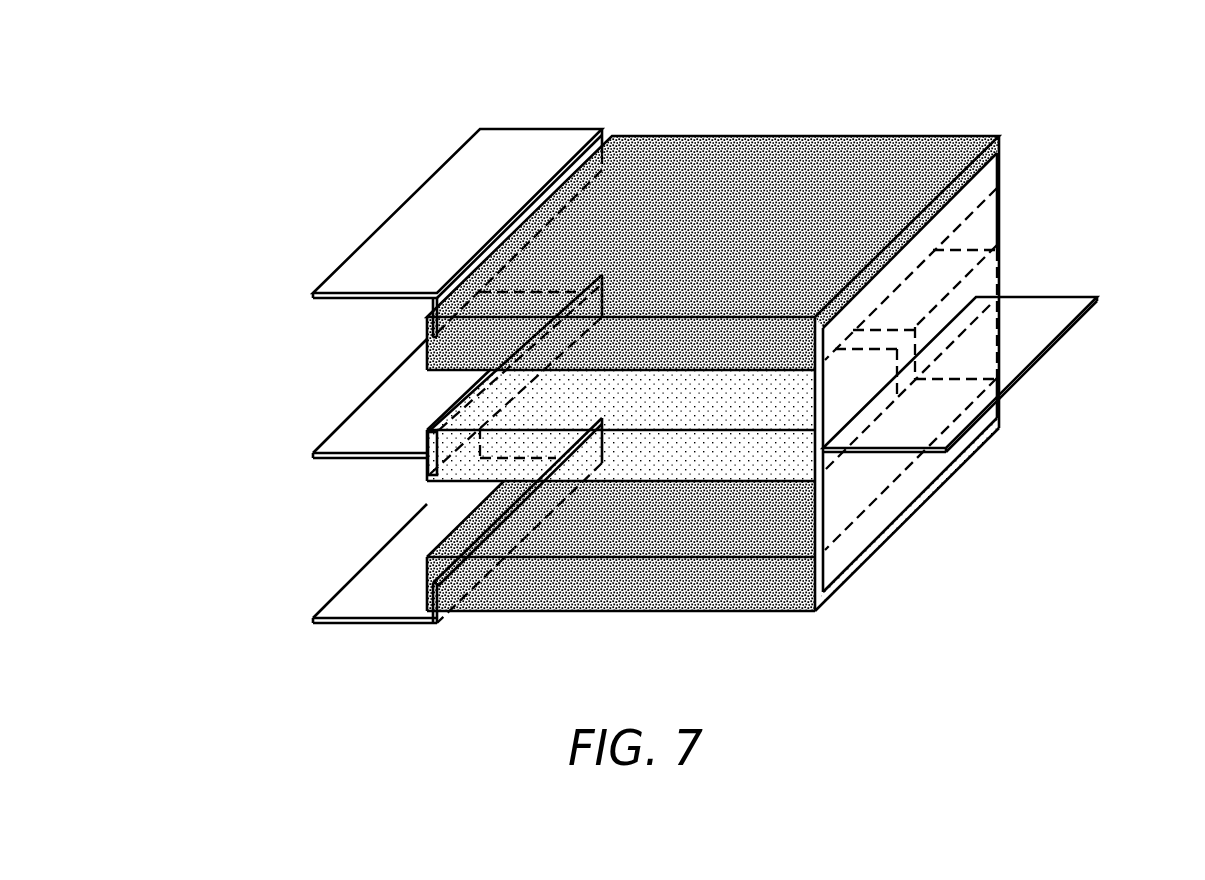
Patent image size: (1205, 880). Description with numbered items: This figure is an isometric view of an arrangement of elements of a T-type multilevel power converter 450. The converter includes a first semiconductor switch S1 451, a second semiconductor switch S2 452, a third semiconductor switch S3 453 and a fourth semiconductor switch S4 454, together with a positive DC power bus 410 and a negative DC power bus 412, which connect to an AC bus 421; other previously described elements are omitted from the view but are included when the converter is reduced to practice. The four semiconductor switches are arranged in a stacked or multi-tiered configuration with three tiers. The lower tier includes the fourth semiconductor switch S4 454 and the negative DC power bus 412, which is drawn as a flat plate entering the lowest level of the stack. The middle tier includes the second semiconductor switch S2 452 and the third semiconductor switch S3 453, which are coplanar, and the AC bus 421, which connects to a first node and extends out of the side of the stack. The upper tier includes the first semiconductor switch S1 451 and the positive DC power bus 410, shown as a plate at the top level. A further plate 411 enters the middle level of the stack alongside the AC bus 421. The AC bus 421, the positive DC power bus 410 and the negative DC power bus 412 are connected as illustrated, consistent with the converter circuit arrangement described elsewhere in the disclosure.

The positive DC power bus 410 is at (425, 223).
The second plate 411 is at (362, 437).
The negative DC power bus 412 is at (362, 603).
The AC bus 421 is at (1013, 355).
The T-type multilevel power converter 450 is at (660, 114).
The first semiconductor switch S1 451 is at (897, 167).
The second semiconductor switch S2 452 is at (722, 453).
The third semiconductor switch S3 453 is at (947, 272).
The fourth semiconductor switch S4 454 is at (515, 588).